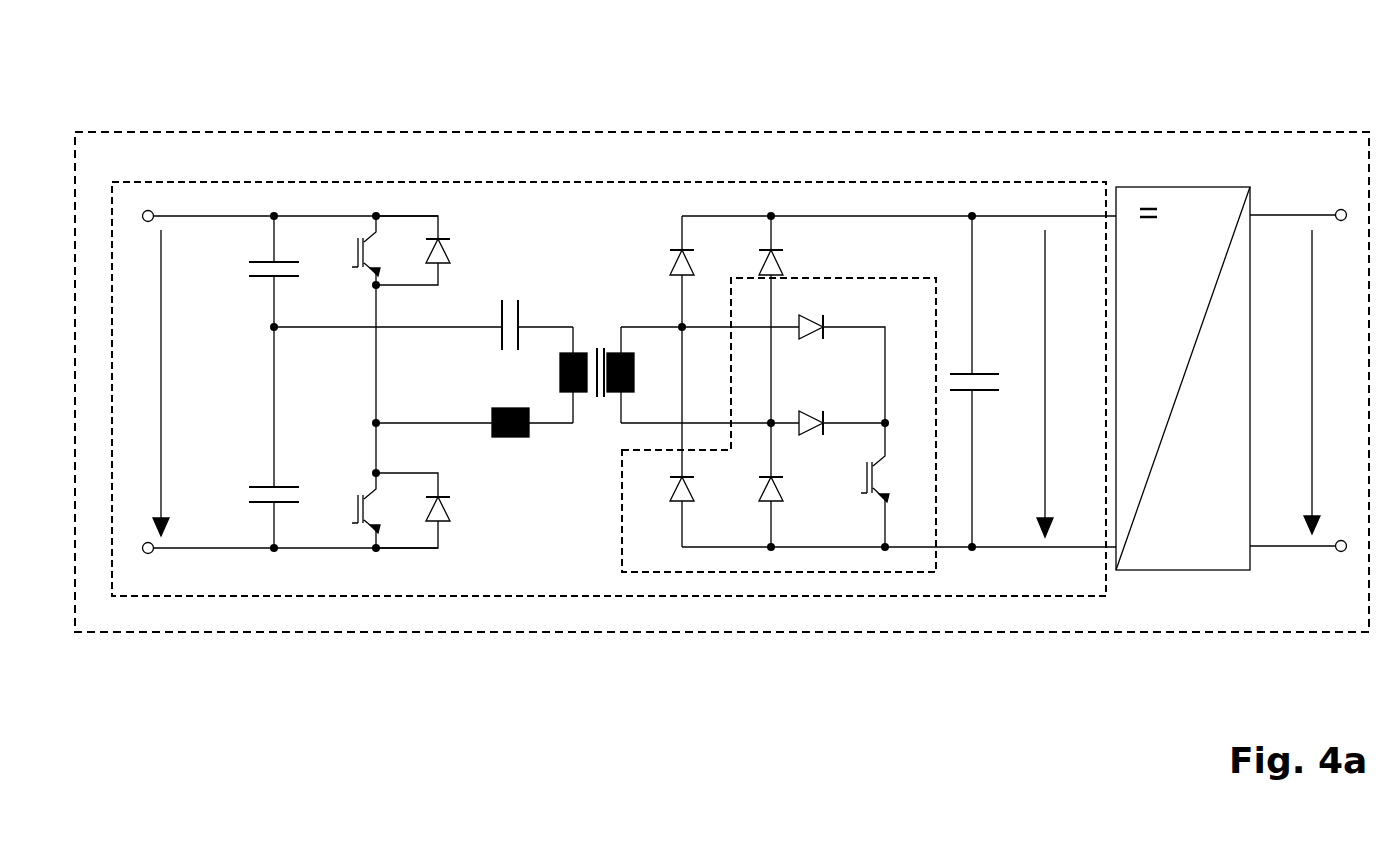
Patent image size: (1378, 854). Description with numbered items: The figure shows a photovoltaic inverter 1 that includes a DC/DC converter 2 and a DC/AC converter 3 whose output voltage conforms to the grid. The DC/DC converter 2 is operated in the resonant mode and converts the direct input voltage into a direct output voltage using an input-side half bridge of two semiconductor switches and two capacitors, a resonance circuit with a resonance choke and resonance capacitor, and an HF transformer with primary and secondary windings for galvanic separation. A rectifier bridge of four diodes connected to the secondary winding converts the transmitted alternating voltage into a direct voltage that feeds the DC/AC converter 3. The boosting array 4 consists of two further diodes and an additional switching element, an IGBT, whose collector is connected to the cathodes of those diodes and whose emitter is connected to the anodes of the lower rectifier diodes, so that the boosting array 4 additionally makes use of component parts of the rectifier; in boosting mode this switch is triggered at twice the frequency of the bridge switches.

The photovoltaic inverter 1 is at (1298, 131).
The DC/DC converter 2 is at (560, 183).
The DC/AC converter 3 is at (1165, 192).
The boosting array 4 is at (622, 522).